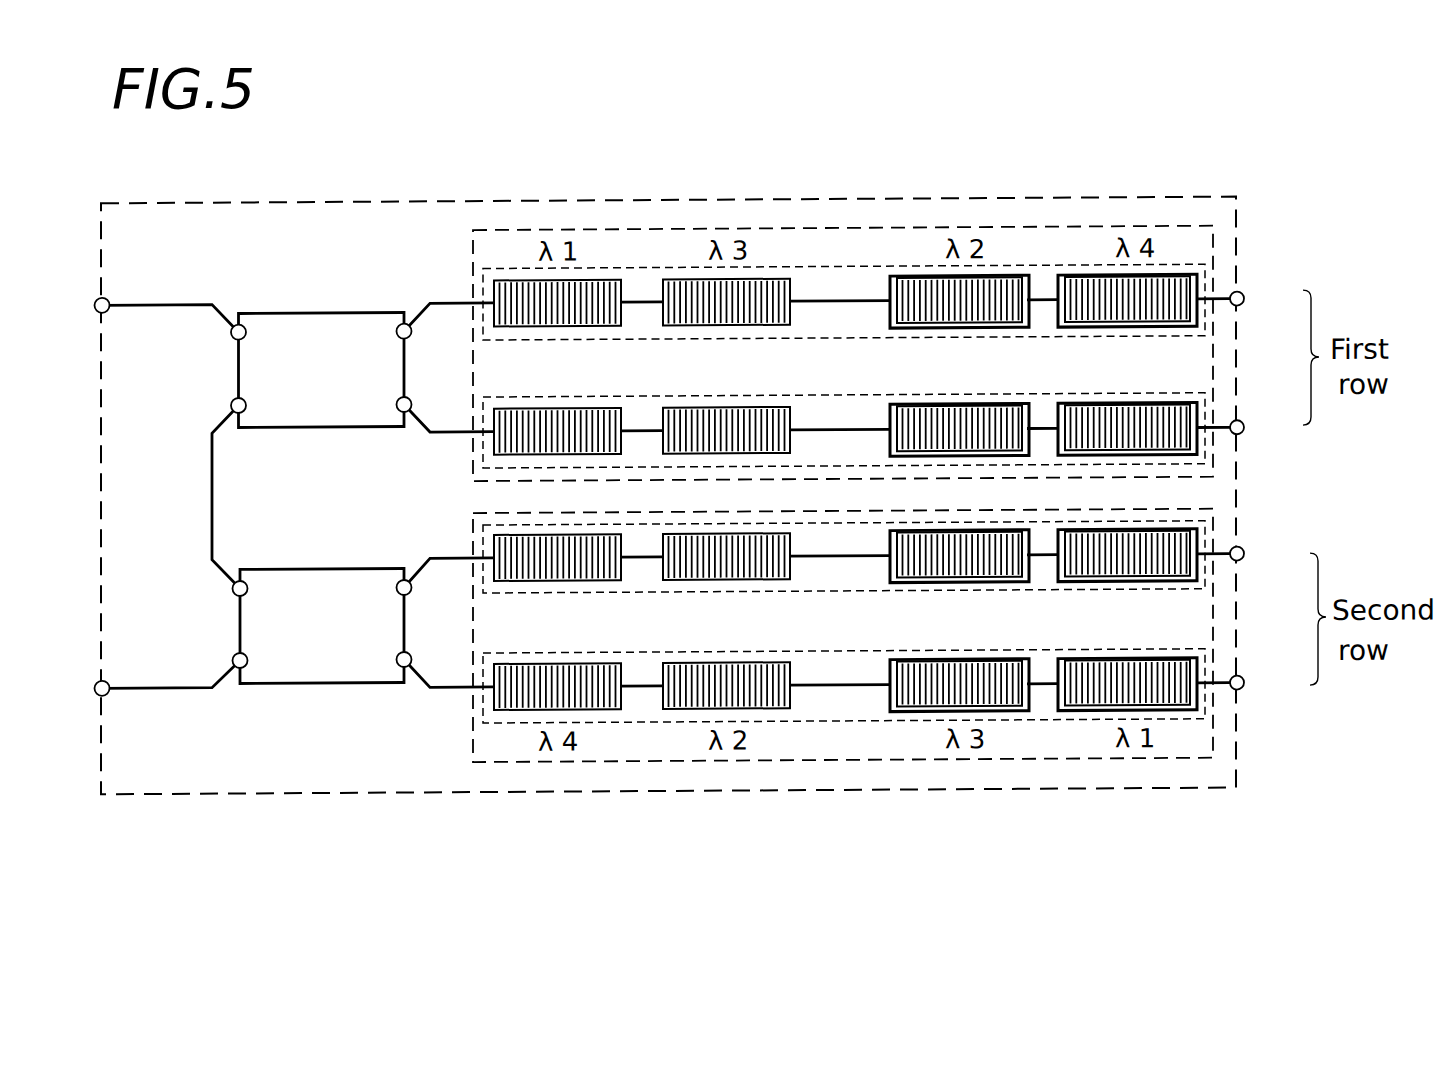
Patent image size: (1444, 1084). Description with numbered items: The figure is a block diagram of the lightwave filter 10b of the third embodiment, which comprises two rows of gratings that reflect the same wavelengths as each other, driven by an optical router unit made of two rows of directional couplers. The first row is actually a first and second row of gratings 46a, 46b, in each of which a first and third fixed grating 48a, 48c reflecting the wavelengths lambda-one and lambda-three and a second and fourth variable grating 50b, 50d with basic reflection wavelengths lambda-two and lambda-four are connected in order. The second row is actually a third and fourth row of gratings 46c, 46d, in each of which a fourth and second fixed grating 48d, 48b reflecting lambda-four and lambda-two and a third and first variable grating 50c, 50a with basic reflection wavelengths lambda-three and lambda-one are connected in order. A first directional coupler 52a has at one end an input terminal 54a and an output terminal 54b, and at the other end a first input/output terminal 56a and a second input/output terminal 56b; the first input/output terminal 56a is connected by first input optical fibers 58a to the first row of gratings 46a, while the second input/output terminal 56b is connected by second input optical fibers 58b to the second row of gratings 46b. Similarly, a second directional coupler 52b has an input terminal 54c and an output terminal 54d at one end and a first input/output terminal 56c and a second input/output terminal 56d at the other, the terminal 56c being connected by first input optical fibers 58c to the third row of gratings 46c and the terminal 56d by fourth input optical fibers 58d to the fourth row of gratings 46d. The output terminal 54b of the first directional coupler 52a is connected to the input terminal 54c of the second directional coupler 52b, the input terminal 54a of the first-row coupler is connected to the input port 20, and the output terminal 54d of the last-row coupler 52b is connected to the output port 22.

The lightwave filter 10b is at (1187, 199).
The input port 20 is at (106, 294).
The output port 22 is at (106, 693).
The first row of gratings 46a is at (1207, 319).
The second row of gratings 46b is at (1207, 408).
The third row of gratings 46c is at (1208, 581).
The fourth row of gratings 46d is at (1208, 664).
The first fixed grating 48a is at (522, 326).
The second fixed grating 48b is at (695, 580).
The third fixed grating 48c is at (695, 326).
The fourth fixed grating 48d is at (522, 580).
The first variable grating 50a is at (1097, 579).
The second variable grating 50b is at (923, 324).
The third variable grating 50c is at (923, 579).
The fourth variable grating 50d is at (1097, 324).
The first directional coupler 52a is at (300, 311).
The second directional coupler 52b is at (299, 684).
The input terminal 54a is at (240, 311).
The output terminal 54b is at (243, 422).
The input terminal 54c is at (247, 578).
The output terminal 54d is at (243, 684).
The first input/output terminal 56a is at (397, 311).
The second input/output terminal 56b is at (396, 420).
The first input/output terminal 56c is at (393, 579).
The second input/output terminal 56d is at (396, 684).
The first input optical fibers 58a is at (432, 430).
The second input optical fibers 58b is at (434, 304).
The first input optical fibers 58c is at (437, 560).
The fourth input optical fibers 58d is at (436, 688).